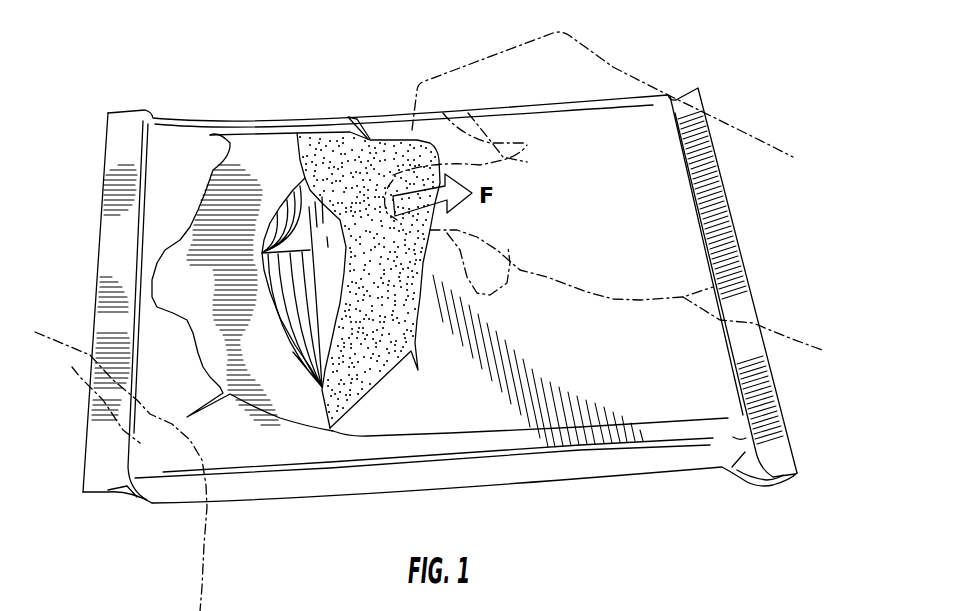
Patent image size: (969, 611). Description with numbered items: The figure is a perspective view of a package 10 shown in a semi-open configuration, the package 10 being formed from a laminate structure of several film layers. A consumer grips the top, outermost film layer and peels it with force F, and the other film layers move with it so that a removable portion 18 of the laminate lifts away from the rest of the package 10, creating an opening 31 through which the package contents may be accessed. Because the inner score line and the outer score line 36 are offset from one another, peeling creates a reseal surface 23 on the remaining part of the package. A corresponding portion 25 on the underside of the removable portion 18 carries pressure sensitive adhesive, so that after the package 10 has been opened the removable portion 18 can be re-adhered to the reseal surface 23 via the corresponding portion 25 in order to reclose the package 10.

The package 10 is at (91, 93).
The removable portion 18 is at (418, 150).
The reseal surface 23 is at (208, 232).
The corresponding portion 25 is at (395, 288).
The opening 31 is at (284, 219).
The outer score line 36 is at (522, 430).